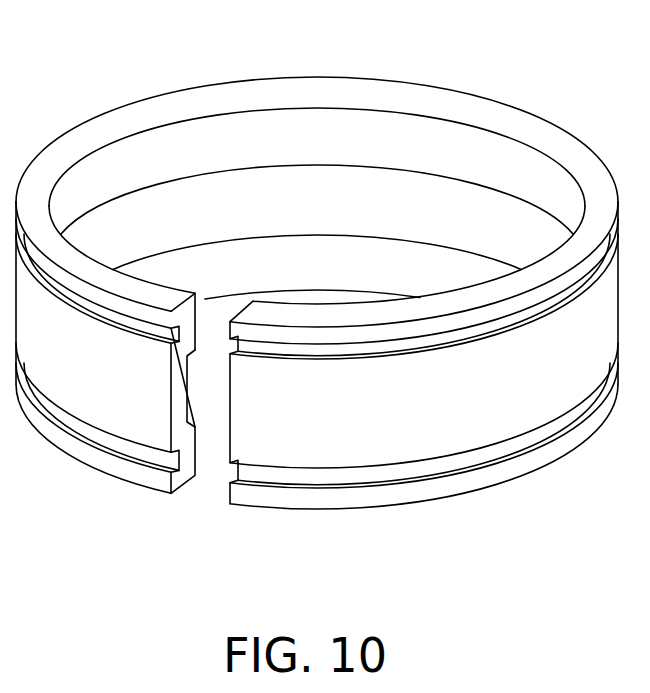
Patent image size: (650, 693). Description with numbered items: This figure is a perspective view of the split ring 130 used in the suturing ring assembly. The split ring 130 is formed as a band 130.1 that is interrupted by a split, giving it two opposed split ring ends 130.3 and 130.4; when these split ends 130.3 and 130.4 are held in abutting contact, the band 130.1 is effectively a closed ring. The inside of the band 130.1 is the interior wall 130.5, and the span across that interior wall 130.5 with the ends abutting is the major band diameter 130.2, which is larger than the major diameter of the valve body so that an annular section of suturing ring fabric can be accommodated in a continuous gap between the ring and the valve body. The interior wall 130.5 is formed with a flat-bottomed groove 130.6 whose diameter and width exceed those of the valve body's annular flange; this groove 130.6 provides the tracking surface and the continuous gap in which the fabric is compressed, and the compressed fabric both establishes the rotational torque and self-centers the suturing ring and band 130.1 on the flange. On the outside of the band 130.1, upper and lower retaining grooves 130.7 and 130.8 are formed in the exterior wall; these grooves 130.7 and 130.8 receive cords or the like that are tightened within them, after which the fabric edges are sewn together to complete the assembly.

The split ring 130 is at (393, 37).
The band 130.1 is at (78, 153).
The major band diameter 130.2 is at (585, 206).
The split ring end 130.3 is at (174, 497).
The split ring end 130.4 is at (229, 497).
The interior wall 130.5 is at (204, 140).
The flat-bottomed groove 130.6 is at (193, 398).
The upper retaining groove 130.7 is at (163, 343).
The lower retaining groove 130.8 is at (133, 463).